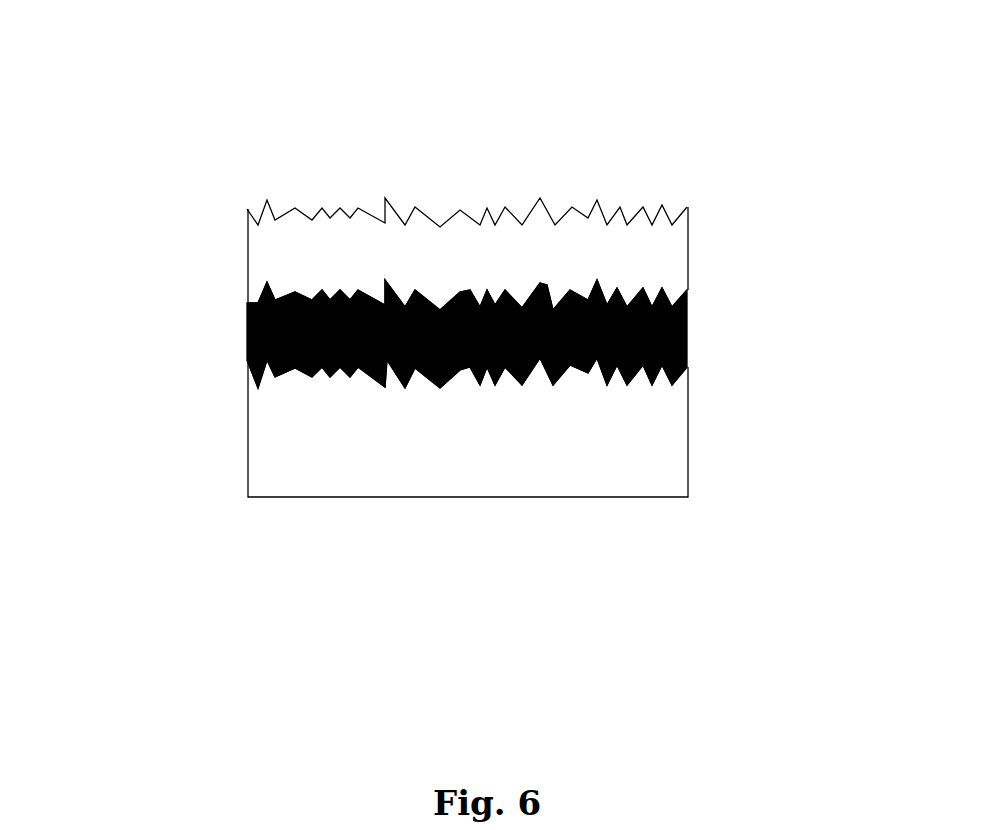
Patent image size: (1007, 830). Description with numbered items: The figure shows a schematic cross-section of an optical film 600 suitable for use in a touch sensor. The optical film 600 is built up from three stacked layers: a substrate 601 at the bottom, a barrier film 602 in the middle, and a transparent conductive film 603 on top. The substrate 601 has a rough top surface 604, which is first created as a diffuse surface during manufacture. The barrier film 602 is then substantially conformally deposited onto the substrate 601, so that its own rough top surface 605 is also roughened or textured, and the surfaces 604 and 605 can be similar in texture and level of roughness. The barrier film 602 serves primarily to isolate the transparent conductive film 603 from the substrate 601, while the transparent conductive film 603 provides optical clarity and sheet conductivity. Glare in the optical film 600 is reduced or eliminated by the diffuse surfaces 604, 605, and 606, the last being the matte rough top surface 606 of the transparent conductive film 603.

The optical film 600 is at (472, 306).
The substrate 601 is at (690, 456).
The barrier film 602 is at (692, 328).
The transparent conductive film 603 is at (690, 250).
The rough top surface of substrate 604 is at (432, 385).
The rough top surface of barrier film 605 is at (547, 285).
The rough top surface of transparent conductive film 606 is at (458, 216).